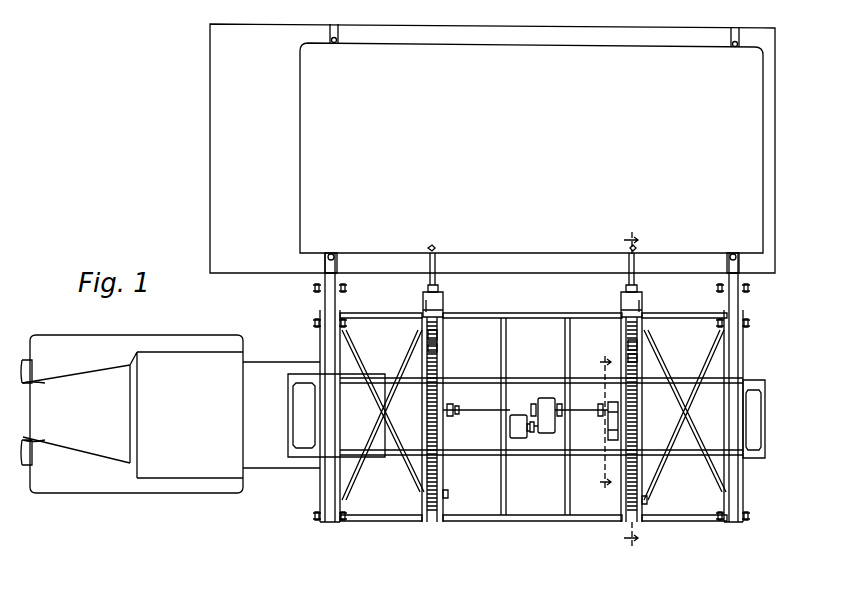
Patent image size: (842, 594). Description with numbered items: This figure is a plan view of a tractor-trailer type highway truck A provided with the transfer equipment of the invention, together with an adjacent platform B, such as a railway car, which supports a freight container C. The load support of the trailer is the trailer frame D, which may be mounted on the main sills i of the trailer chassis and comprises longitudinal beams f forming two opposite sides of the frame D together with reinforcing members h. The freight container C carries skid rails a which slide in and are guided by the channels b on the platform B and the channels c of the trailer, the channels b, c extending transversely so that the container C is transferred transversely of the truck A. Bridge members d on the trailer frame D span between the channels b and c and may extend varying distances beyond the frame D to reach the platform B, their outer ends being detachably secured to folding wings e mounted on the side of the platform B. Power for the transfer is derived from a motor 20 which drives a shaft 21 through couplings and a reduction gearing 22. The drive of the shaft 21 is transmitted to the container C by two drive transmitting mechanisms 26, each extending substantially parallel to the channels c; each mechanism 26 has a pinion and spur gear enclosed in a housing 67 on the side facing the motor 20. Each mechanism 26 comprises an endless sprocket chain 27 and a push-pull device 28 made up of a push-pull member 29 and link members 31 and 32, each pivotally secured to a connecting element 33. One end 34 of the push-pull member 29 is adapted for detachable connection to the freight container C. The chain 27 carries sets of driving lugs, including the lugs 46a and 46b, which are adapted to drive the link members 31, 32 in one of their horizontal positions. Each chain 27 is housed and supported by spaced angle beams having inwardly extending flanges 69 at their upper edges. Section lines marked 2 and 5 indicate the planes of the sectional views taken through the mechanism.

The vehicle or highway truck A is at (132, 414).
The platform B is at (492, 148).
The freight container C is at (531, 148).
The trailer frame D is at (530, 308).
The skid rails a is at (743, 241).
The channels b is at (724, 270).
The channels c is at (742, 353).
The bridge members d is at (738, 308).
The folding wings e is at (760, 288).
The longitudinal beams f is at (688, 534).
The reinforcing members h is at (696, 402).
The main sills i is at (300, 446).
The section line 2- 2 is at (604, 419).
The section line 5- 5 is at (631, 392).
The motor 20 is at (520, 438).
The shaft 21 is at (519, 412).
The reduction gearing 22 is at (546, 398).
The drive transmitting mechanisms 26 is at (655, 500).
The sprocket chain 27 is at (644, 425).
The push-pull device 28 is at (621, 294).
The push-pull member 29 is at (635, 270).
The link member 31 is at (651, 300).
The link member 32 is at (620, 305).
The connecting element 33 is at (611, 282).
The end of push-pull member 34 is at (650, 240).
The chain lug 46a is at (654, 345).
The chain lug 46b is at (654, 360).
The housing 67 is at (636, 404).
The flanges 69 is at (642, 334).